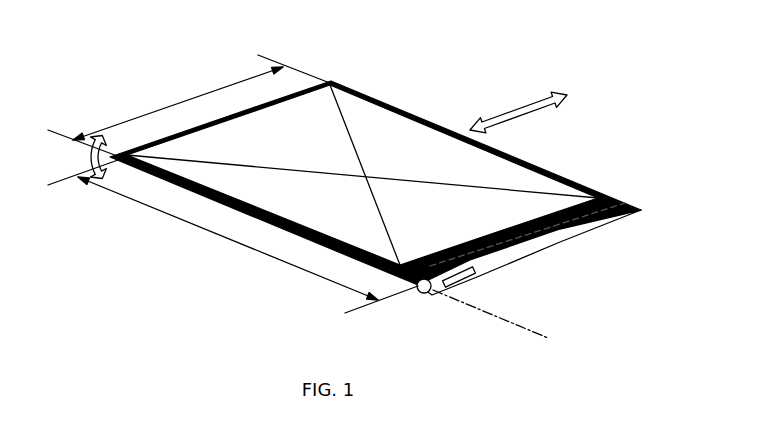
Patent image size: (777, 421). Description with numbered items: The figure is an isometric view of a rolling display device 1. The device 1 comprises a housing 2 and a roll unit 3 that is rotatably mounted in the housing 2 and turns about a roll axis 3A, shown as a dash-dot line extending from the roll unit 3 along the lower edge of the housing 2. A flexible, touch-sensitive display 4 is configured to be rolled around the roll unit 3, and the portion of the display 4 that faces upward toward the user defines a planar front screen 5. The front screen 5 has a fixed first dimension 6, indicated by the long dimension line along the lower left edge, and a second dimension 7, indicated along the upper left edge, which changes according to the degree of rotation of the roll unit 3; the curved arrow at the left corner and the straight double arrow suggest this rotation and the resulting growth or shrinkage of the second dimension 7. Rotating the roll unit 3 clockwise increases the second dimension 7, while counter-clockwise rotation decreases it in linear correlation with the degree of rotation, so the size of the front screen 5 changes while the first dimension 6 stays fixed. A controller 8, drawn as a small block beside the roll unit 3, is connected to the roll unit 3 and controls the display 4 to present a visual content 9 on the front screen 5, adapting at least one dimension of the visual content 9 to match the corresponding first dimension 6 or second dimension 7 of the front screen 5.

The device 1 is at (344, 206).
The housing 2 is at (525, 260).
The roll unit 3 is at (427, 295).
The roll axis 3A is at (520, 325).
The display 4 is at (562, 238).
The front screen 5 is at (607, 193).
The first dimension 6 is at (233, 236).
The second dimension 7 is at (189, 106).
The controller 8 is at (473, 280).
The visual content 9 is at (357, 112).